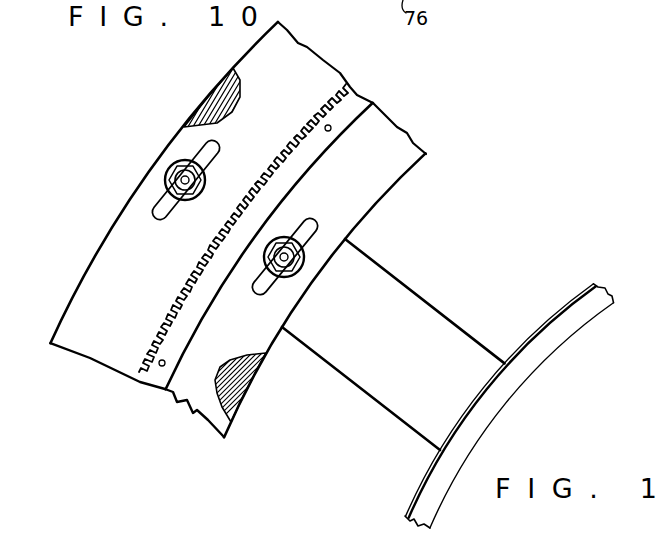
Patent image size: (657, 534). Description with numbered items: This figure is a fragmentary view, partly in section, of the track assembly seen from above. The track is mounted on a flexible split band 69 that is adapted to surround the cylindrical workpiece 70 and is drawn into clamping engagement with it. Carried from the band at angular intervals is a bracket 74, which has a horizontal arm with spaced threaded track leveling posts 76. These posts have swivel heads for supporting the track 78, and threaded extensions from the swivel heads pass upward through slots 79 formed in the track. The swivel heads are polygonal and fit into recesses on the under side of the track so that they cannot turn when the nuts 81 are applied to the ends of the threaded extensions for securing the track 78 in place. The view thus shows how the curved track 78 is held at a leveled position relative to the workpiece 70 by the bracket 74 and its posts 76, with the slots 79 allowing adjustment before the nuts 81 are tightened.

The track 78 is at (390, 141).
The slots 79 is at (193, 130).
The nuts 81 is at (177, 167).
The track leveling posts 76 is at (186, 200).
The bracket 74 is at (410, 292).
The flexible split band 69 is at (555, 313).
The cylindrical workpiece 70 is at (572, 331).